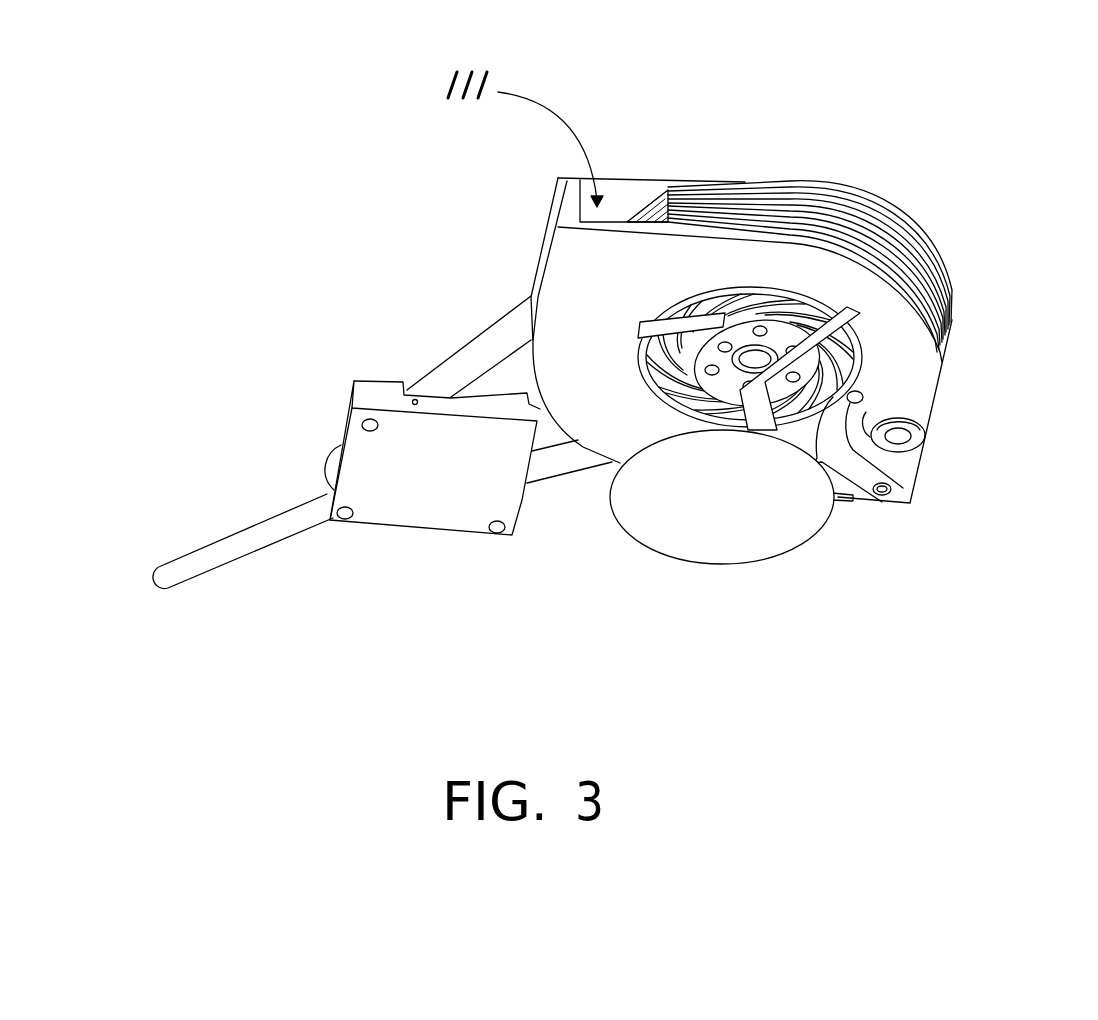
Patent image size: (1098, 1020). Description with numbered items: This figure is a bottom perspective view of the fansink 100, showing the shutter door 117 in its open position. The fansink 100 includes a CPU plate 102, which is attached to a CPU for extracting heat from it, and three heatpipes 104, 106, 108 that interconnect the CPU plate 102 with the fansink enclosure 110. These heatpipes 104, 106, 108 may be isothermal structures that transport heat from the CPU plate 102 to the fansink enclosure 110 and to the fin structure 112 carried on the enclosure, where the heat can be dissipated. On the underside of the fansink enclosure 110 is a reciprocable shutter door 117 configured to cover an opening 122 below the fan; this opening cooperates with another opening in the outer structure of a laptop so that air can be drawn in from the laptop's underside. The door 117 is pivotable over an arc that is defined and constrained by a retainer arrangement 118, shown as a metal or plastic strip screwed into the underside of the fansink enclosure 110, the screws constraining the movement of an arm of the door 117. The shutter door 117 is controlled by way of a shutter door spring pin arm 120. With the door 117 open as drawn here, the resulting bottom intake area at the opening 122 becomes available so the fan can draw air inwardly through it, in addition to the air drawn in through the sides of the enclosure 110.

The fansink 100 is at (431, 583).
The CPU plate 102 is at (373, 384).
The heatpipe 104 is at (481, 351).
The heatpipe 106 is at (552, 462).
The heatpipe 108 is at (253, 533).
The fansink enclosure 110 is at (549, 223).
The fin structure 112 is at (722, 198).
The shutter door 117 is at (728, 527).
The retainer arrangement 118 is at (855, 470).
The shutter door spring pin arm 120 is at (892, 335).
The opening 122 is at (868, 373).